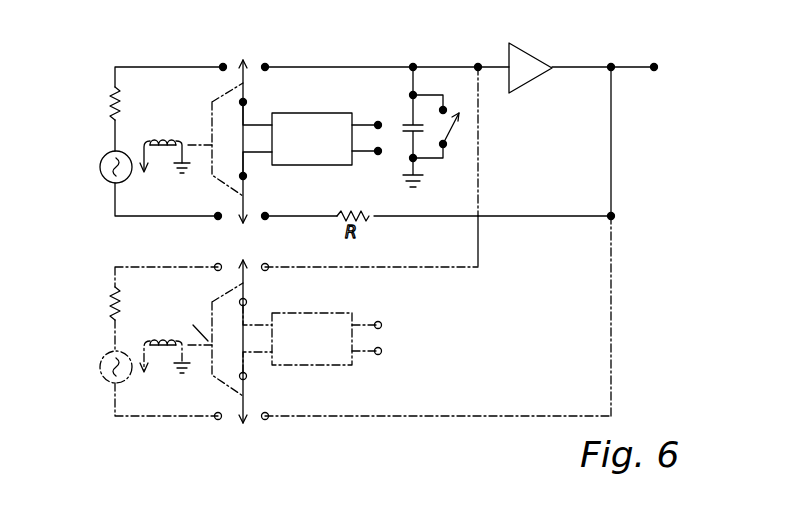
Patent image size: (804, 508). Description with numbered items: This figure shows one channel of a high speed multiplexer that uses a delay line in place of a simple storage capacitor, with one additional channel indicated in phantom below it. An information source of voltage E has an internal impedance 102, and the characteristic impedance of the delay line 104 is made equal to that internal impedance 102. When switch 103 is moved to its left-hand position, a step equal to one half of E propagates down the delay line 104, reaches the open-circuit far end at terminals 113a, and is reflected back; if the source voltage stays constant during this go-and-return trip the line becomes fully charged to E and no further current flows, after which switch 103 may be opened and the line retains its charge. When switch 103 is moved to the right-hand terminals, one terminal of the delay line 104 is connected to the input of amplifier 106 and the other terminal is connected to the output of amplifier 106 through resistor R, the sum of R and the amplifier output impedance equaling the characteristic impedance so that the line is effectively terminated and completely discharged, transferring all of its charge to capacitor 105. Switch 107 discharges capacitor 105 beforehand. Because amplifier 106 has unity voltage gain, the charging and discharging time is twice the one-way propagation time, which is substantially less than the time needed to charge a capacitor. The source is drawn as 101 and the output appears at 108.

The signal source 101 is at (100, 163).
The internal impedance 102 is at (110, 101).
The switch 103 is at (208, 141).
The delay line 104 is at (310, 112).
The capacitor 105 is at (408, 122).
The amplifier 106 is at (535, 56).
The switch 107 is at (450, 130).
The output terminal 108 is at (654, 67).
The terminals 113a is at (370, 158).